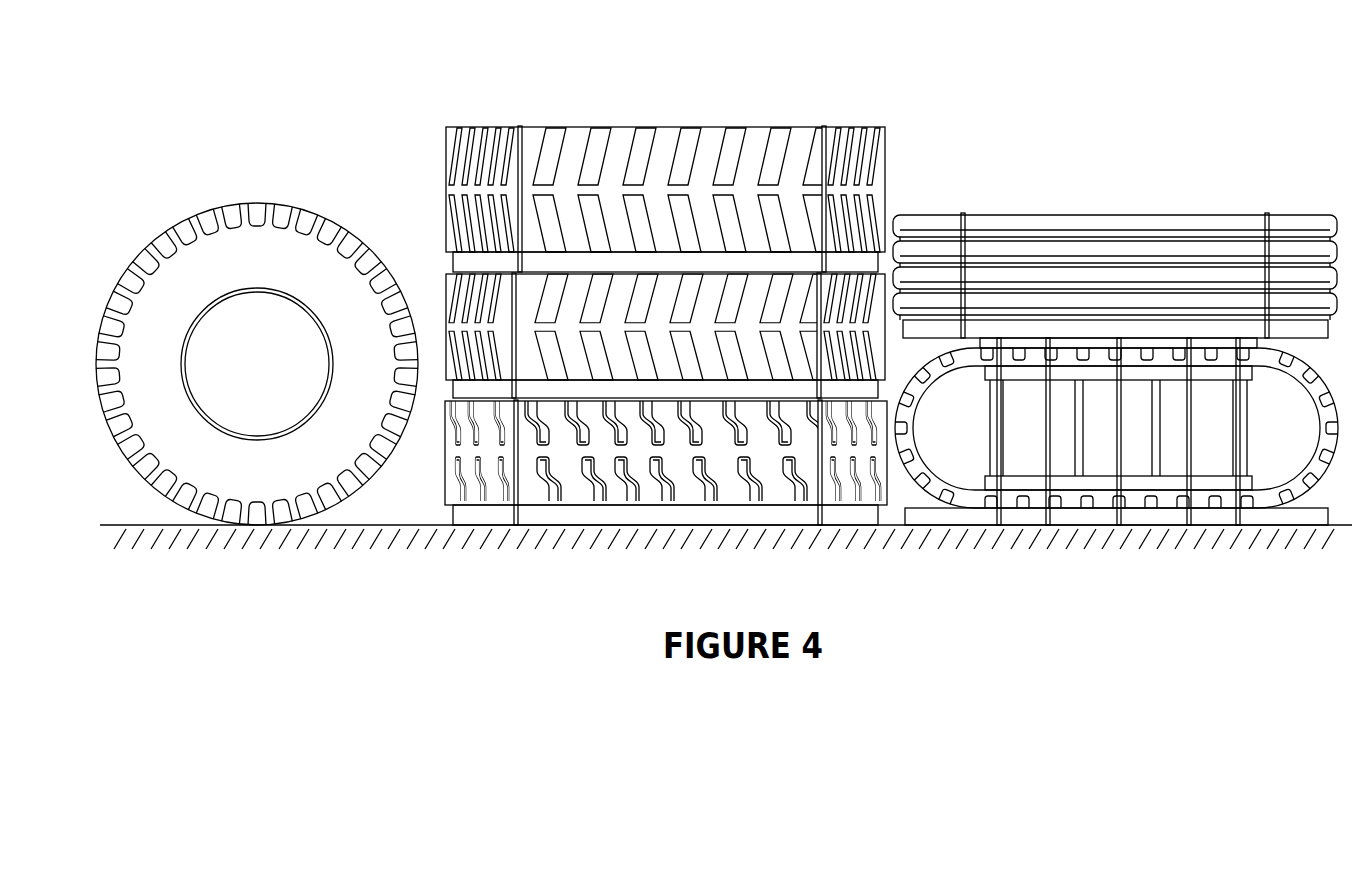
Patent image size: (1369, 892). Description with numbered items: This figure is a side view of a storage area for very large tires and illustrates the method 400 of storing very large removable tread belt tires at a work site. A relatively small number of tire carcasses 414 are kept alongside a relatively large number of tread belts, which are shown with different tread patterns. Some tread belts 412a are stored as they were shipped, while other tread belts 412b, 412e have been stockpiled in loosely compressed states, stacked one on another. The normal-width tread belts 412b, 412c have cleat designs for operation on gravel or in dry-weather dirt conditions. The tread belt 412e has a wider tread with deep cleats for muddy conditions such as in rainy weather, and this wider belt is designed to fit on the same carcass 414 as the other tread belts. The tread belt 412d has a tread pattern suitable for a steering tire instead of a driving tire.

The method of storing very large removable tread belt tires 400 is at (1083, 75).
The tire carcass 414 is at (307, 222).
The tread belt 412a is at (1290, 490).
The tread belt 412b is at (446, 452).
The tread belt 412c is at (446, 292).
The tread belt 412d is at (1125, 215).
The tread belt 412e is at (446, 168).